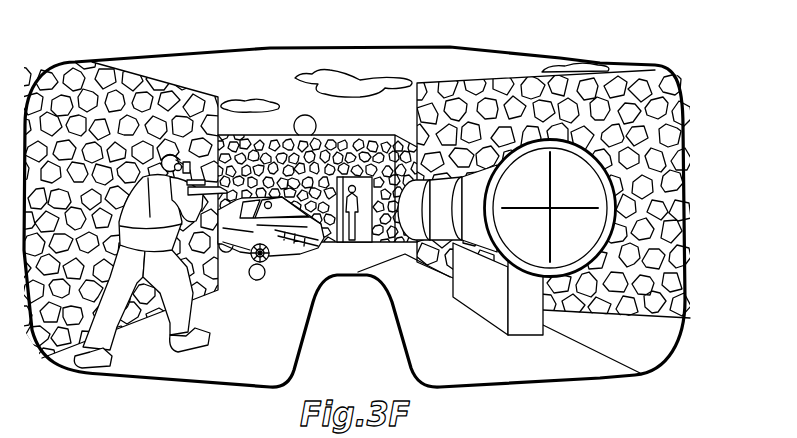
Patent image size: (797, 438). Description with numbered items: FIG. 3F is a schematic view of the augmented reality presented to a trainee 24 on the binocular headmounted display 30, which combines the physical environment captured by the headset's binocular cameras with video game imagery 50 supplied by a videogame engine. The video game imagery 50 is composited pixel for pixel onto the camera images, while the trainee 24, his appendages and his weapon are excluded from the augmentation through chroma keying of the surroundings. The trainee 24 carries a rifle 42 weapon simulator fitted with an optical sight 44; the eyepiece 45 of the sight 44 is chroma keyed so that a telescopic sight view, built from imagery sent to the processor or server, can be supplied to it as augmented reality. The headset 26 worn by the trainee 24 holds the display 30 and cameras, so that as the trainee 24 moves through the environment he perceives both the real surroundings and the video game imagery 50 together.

The trainee 24 is at (156, 214).
The head-mounted display 26 is at (183, 160).
The headmounted display 30 is at (684, 128).
The rifle 42 is at (613, 357).
The optical sight 44 is at (462, 180).
The chroma keyed eyepiece 45 is at (580, 258).
The video game imagery 50 is at (165, 157).